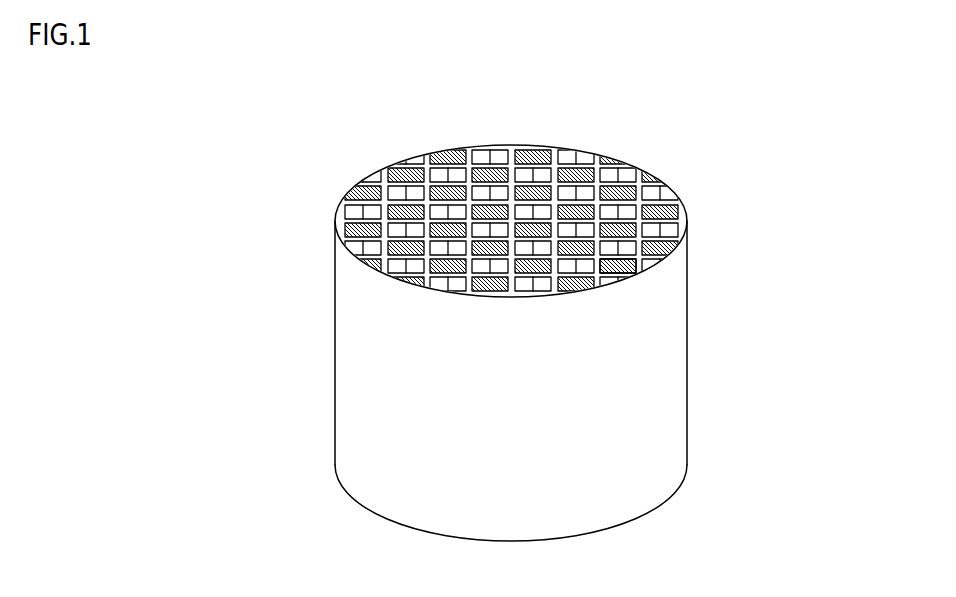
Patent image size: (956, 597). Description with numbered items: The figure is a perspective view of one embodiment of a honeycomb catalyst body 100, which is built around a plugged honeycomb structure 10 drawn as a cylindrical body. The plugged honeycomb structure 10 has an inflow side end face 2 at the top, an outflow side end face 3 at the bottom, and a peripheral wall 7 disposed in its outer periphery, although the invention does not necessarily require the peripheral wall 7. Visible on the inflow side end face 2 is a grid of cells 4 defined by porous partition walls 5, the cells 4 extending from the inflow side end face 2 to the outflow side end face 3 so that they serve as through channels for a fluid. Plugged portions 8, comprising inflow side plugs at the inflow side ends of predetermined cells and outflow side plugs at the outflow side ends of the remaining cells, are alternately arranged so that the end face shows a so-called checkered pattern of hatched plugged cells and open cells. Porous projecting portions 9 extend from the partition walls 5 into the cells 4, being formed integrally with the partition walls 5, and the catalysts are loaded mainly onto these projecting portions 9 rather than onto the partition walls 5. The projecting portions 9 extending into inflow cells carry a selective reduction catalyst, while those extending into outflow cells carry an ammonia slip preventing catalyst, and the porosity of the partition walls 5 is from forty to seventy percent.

The honeycomb catalyst body 100 is at (779, 105).
The plugged honeycomb structure 10 is at (688, 357).
The inflow side end face 2 is at (510, 146).
The outflow side end face 3 is at (503, 541).
The cells 4 is at (627, 207).
The partition walls 5 is at (511, 263).
The peripheral wall 7 is at (343, 220).
The plugged portions 8 is at (633, 272).
The projecting portions 9 is at (440, 192).